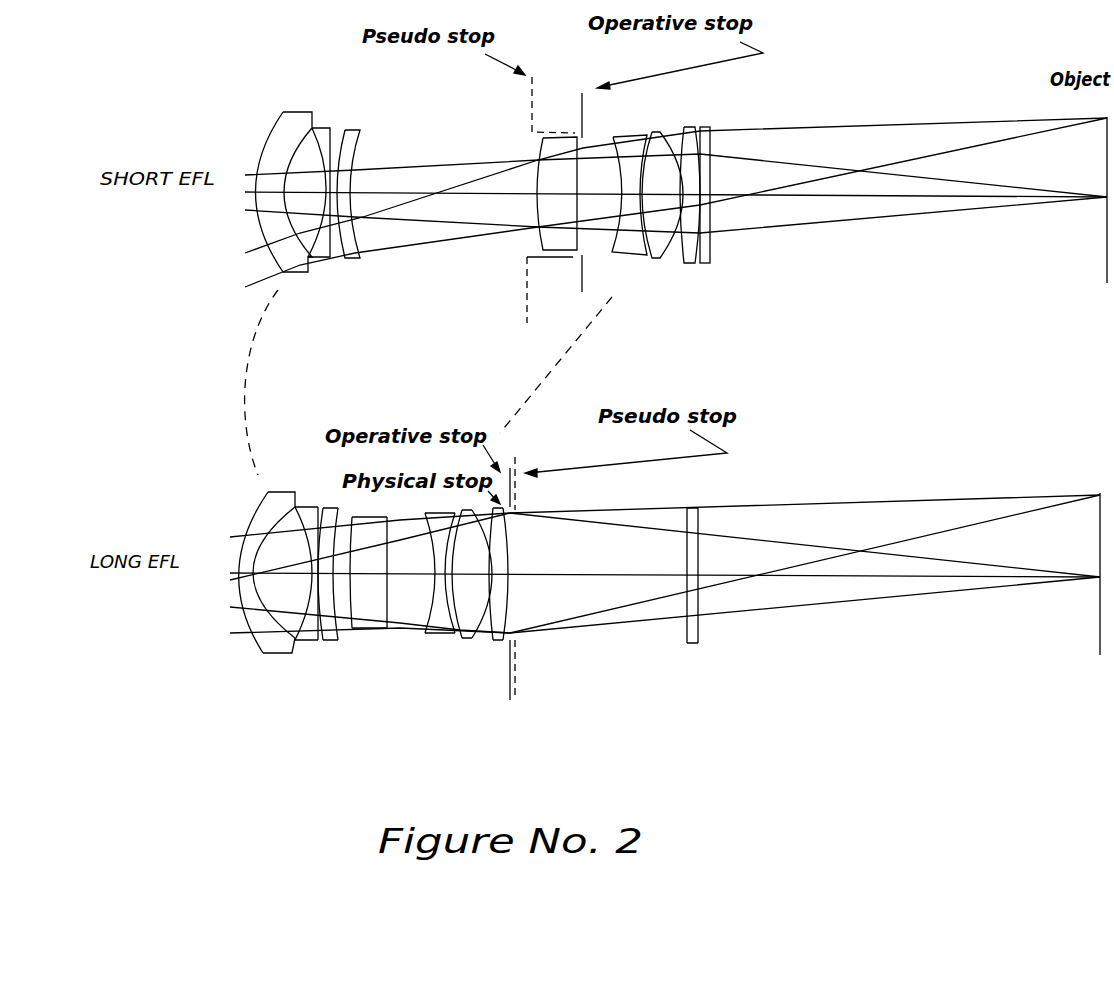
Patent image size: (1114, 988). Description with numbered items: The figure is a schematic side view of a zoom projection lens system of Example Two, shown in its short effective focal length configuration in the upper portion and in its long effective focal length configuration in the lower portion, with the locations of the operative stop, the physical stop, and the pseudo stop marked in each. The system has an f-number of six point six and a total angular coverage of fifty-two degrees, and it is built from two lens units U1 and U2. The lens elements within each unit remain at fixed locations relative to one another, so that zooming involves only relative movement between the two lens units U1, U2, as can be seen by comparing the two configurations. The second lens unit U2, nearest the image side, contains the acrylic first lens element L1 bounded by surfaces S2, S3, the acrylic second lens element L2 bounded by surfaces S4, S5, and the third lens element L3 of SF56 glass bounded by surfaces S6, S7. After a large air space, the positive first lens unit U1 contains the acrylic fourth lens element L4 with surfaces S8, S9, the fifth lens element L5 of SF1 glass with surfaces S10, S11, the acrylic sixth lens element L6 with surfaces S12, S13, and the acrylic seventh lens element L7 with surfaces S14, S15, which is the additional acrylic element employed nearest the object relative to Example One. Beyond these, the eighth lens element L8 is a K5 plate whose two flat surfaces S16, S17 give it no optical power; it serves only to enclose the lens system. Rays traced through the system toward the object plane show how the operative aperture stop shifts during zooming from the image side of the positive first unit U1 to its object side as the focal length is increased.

The first lens unit U1 is at (538, 133).
The second lens unit U2 is at (378, 105).
The first lens element L1 is at (225, 617).
The second lens element L2 is at (301, 615).
The third lens element L3 is at (371, 615).
The fourth lens element L4 is at (384, 583).
The fifth lens element L5 is at (488, 614).
The sixth lens element L6 is at (553, 623).
The seventh lens element L7 is at (500, 548).
The eighth lens element L8 is at (757, 575).
The surface 2 S2 is at (258, 648).
The surface 3 S3 is at (290, 640).
The surface 4 S4 is at (302, 640).
The surface 5 S5 is at (318, 640).
The surface 6 S6 is at (323, 640).
The surface 7 S7 is at (338, 640).
The surface 8 S8 is at (349, 628).
The surface 9 S9 is at (386, 628).
The surface 10 S10 is at (428, 633).
The surface 11 S11 is at (456, 633).
The surface 12 S12 is at (466, 638).
The surface 13 S13 is at (480, 640).
The surface 14 S14 is at (495, 640).
The surface 15 S15 is at (505, 640).
The surface 16 S16 is at (690, 643).
The surface 17 S17 is at (698, 618).